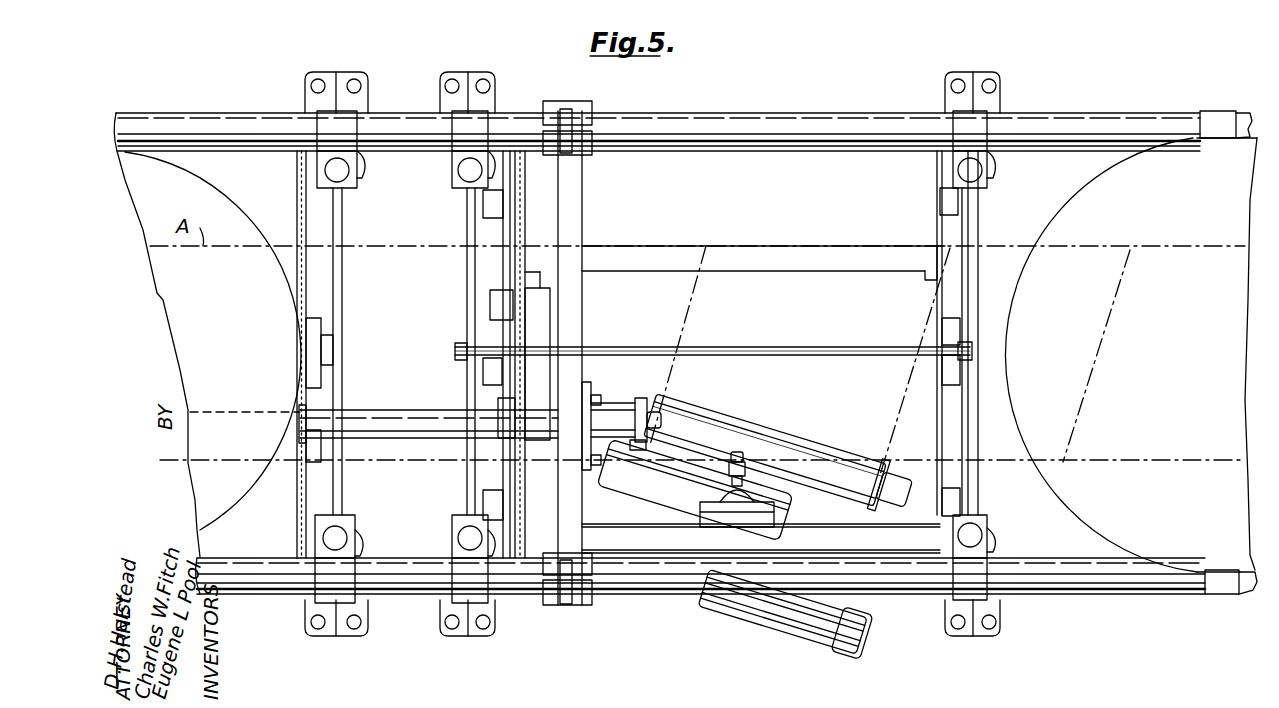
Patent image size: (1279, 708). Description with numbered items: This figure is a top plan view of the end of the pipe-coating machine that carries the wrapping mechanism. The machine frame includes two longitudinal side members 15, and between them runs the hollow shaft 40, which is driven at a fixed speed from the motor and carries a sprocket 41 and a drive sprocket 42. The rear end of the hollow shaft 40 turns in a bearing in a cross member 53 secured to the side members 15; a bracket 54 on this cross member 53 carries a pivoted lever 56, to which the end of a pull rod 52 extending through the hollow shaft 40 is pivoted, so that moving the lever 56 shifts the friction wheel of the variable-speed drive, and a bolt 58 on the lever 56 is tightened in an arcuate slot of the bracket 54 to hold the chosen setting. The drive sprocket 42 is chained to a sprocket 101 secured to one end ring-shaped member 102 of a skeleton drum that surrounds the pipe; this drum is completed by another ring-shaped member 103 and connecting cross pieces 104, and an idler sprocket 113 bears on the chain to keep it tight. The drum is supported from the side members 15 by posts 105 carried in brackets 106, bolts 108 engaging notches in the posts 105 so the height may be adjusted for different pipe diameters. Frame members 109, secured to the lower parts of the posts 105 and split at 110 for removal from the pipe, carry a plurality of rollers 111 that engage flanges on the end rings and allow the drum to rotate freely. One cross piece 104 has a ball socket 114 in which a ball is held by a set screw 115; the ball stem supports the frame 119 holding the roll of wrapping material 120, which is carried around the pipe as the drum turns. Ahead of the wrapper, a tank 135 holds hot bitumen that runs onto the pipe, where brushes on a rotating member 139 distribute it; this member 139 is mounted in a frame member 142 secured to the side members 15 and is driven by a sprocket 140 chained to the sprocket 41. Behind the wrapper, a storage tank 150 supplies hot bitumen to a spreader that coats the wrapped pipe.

The longitudinal side members 15 is at (772, 112).
The hollow shaft 40 is at (397, 420).
The sprocket 41 is at (296, 462).
The drive sprocket 42 is at (512, 456).
The pull rod 52 is at (600, 420).
The cross member 53 is at (582, 305).
The bracket 54 is at (645, 405).
The lever 56 is at (660, 428).
The bolt 58 is at (646, 448).
The sprocket 101 is at (521, 213).
The ring-shaped member 102 is at (503, 268).
The ring-shaped member 103 is at (950, 436).
The cross pieces 104 is at (818, 265).
The posts 105 is at (462, 172).
The brackets 106 is at (462, 165).
The bolts 108 is at (456, 186).
The frame members 109 is at (467, 312).
The split 110 is at (482, 72).
The rollers 111 is at (485, 218).
The idler sprocket 113 is at (535, 297).
The ball socket 114 is at (760, 496).
The set screw 115 is at (748, 462).
The frame 119 is at (656, 512).
The roll of wrapping material 120 is at (838, 472).
The tank 135 is at (228, 500).
The rotating member 139 is at (293, 290).
The sprocket 140 is at (296, 520).
The frame member 142 is at (342, 290).
The storage tank 150 is at (1122, 540).